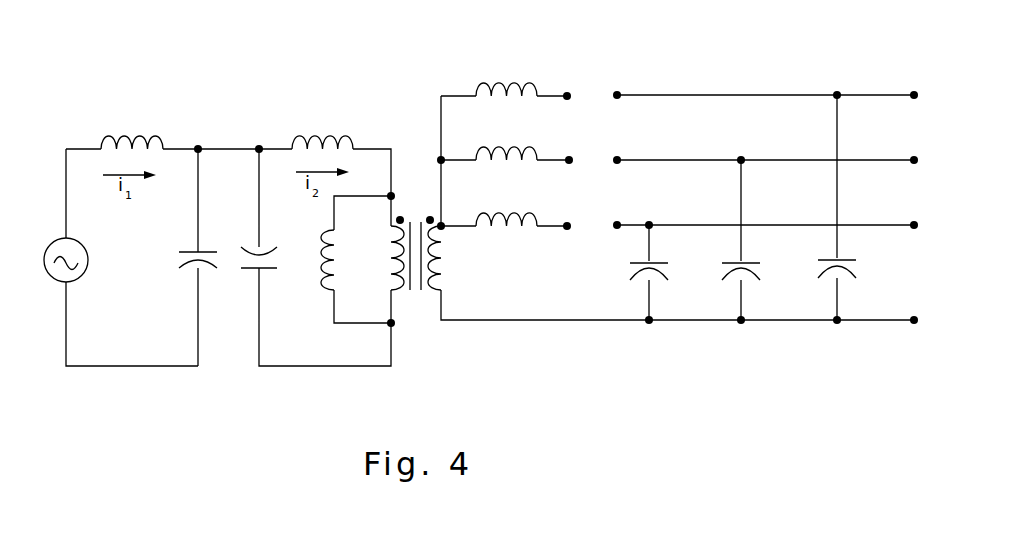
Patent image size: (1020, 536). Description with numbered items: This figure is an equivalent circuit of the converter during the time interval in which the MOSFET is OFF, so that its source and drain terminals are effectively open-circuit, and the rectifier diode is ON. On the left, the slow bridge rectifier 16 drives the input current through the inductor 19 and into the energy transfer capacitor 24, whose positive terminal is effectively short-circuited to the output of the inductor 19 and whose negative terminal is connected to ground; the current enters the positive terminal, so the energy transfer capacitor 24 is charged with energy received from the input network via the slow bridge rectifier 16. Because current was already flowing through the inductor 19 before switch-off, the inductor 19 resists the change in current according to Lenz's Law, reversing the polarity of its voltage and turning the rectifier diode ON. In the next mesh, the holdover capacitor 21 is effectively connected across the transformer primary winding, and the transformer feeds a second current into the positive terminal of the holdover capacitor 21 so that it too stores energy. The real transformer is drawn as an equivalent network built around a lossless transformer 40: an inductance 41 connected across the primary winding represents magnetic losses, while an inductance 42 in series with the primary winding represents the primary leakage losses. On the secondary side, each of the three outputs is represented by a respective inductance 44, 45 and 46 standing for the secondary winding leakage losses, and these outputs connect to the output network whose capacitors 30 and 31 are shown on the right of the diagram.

The slow bridge rectifier 16 is at (87, 268).
The inductor 19 is at (125, 135).
The energy transfer capacitor 24 is at (187, 262).
The holdover capacitor 21 is at (267, 270).
The inductance representing primary leakage losses 42 is at (313, 132).
The inductance representing magnetic losses 41 is at (325, 290).
The lossless transformer 40 is at (414, 302).
The inductance representing secondary winding leakage losses 44 is at (502, 82).
The inductance representing secondary winding leakage losses 45 is at (498, 147).
The inductance representing secondary winding leakage losses 46 is at (513, 215).
The capacitor 30 is at (848, 257).
The capacitor 31 is at (747, 270).